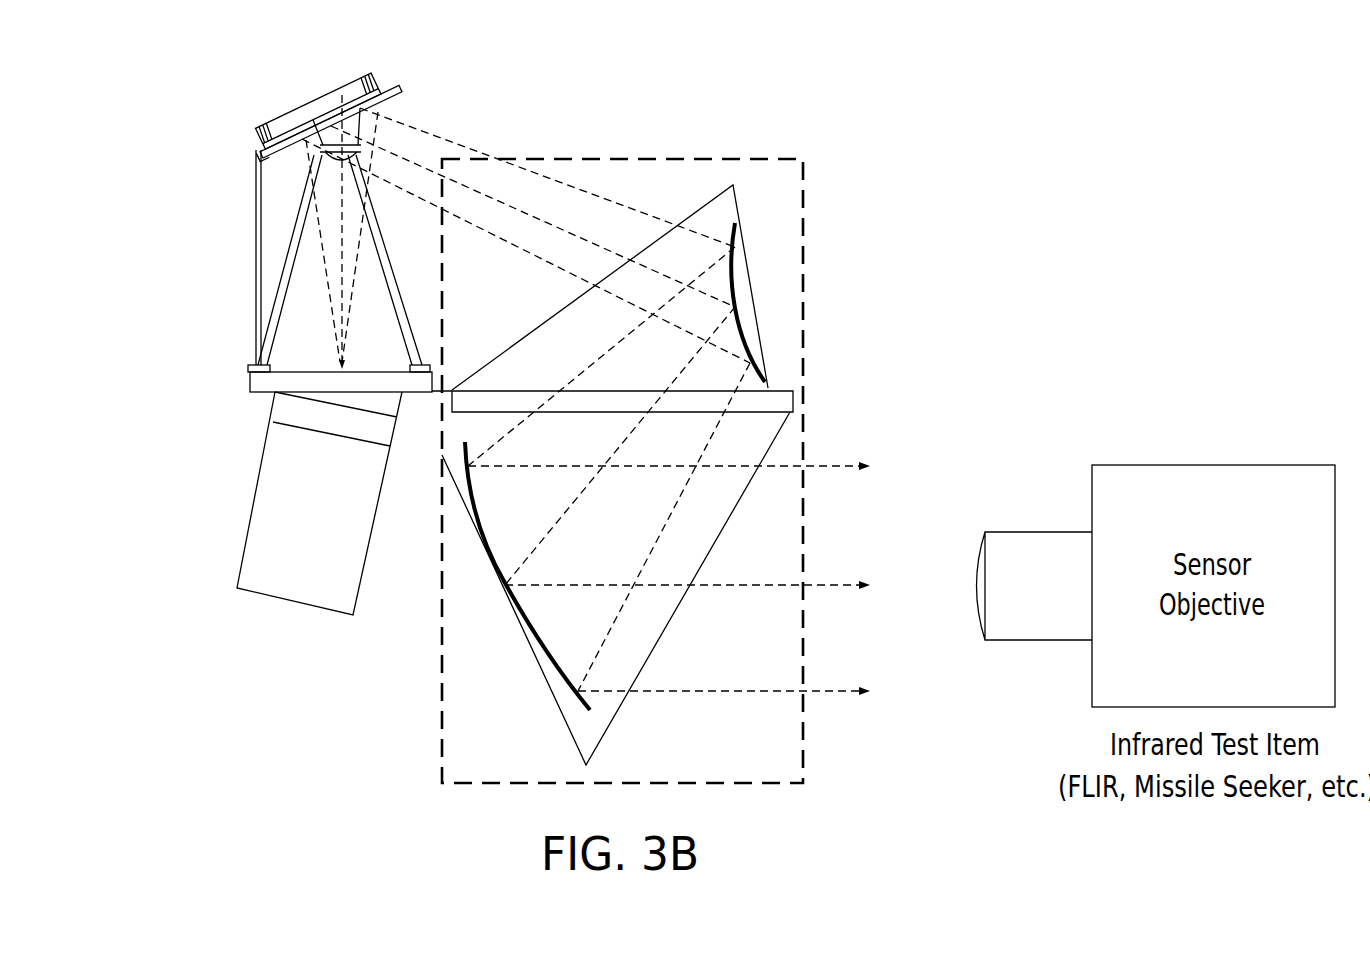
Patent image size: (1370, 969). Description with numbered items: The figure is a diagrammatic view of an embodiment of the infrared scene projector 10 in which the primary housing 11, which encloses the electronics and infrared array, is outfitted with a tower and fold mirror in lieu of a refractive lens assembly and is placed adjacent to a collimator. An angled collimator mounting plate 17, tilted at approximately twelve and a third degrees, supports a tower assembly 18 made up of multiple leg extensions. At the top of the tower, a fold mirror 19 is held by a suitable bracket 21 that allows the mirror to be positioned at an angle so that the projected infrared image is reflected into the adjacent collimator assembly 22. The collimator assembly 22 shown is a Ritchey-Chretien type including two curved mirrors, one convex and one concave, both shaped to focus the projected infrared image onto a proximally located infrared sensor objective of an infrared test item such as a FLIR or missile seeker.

The infrared scene projector 10 is at (198, 459).
The primary housing 11 is at (236, 524).
The collimator mounting plate 17 is at (236, 379).
The tower assembly 18 is at (213, 238).
The fold mirror 19 is at (404, 98).
The bracket 21 is at (283, 121).
The collimator assembly 22 is at (682, 140).